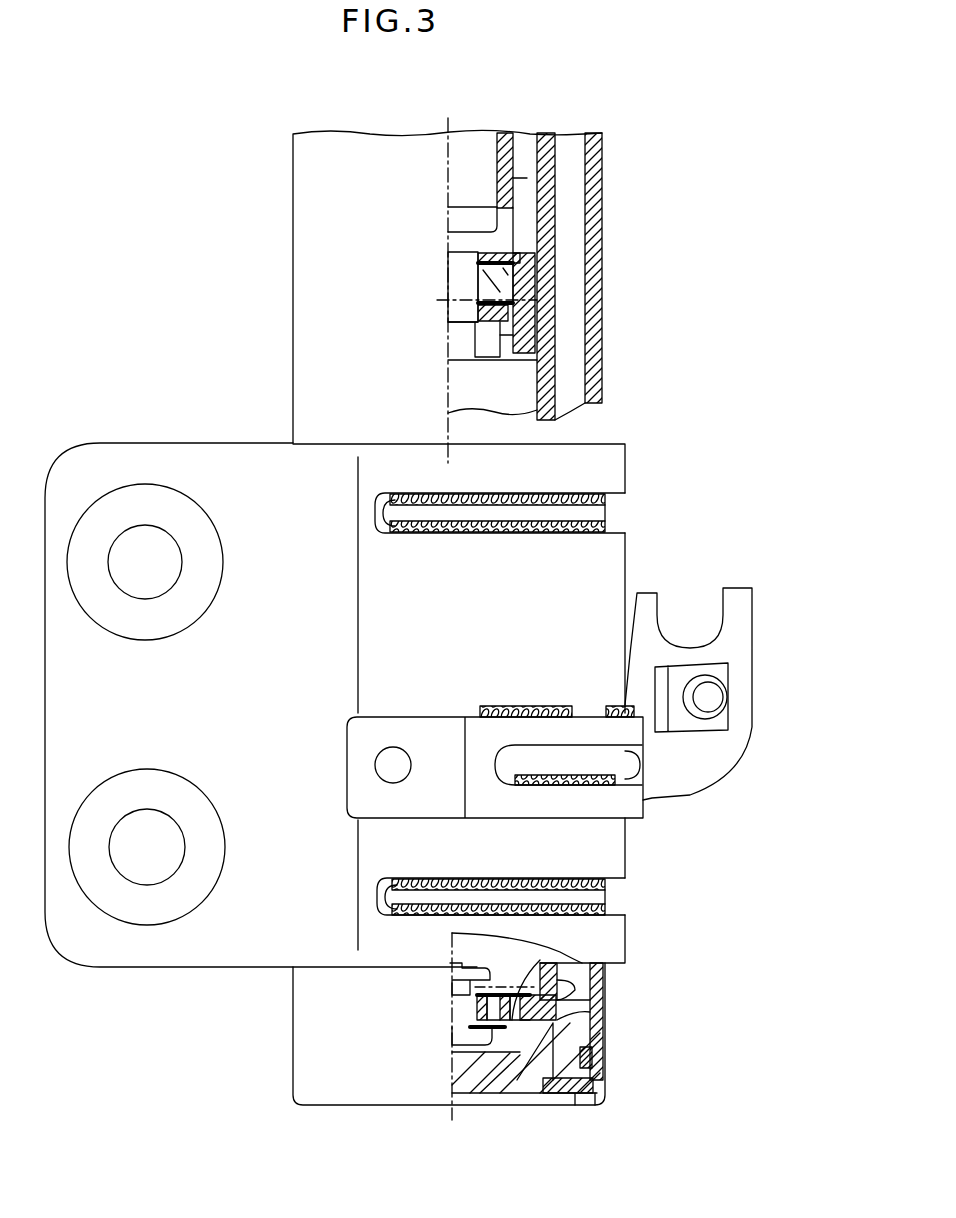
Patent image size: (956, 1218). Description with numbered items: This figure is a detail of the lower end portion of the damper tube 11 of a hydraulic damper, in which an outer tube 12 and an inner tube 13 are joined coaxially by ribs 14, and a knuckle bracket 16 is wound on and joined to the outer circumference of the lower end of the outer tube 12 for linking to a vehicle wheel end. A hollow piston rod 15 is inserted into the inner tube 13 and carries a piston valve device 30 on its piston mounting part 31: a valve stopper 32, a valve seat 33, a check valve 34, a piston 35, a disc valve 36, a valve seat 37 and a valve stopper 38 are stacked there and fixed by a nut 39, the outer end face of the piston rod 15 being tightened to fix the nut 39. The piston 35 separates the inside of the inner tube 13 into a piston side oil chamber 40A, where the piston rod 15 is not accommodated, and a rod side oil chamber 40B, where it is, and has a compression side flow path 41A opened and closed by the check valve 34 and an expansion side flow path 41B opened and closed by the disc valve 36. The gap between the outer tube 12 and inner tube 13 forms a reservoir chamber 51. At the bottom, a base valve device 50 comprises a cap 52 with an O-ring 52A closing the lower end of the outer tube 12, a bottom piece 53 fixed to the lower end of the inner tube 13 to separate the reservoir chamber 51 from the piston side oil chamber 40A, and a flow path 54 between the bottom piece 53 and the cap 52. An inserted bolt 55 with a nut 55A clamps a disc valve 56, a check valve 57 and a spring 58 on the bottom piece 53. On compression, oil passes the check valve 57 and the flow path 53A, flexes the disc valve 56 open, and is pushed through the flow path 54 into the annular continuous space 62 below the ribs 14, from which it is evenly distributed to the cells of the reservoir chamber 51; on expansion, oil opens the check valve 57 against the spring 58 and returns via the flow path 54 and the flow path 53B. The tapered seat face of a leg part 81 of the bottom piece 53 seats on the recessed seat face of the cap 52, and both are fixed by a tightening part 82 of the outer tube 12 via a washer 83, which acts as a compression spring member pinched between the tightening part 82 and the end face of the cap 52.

The damper tube 11 is at (605, 152).
The outer tube 12 is at (592, 145).
The inner tube 13 is at (545, 145).
The ribs 14 is at (570, 145).
The piston rod 15 is at (503, 145).
The knuckle bracket 16 is at (187, 460).
The piston valve device 30 is at (447, 280).
The piston mounting part 31 is at (462, 266).
The valve stopper 32 is at (520, 253).
The valve seat 33 is at (478, 250).
The check valve 34 is at (515, 262).
The piston 35 is at (527, 285).
The disc valve 36 is at (513, 305).
The valve seat 37 is at (487, 328).
The valve stopper 38 is at (510, 320).
The nut 39 is at (462, 340).
The piston side oil chamber 40A is at (465, 390).
The rod side oil chamber 40B is at (510, 178).
The compression side flow path 41A is at (537, 298).
The expansion side flow path 41B is at (437, 300).
The base valve device 50 is at (497, 962).
The reservoir chamber 51 is at (573, 180).
The cap 52 is at (462, 1072).
The O-ring 52A is at (596, 1055).
The bottom piece 53 is at (562, 1020).
The flow path 53A is at (488, 1010).
The flow path 53B is at (596, 1003).
The flow path 54 is at (540, 1060).
The bolt 55 is at (458, 1035).
The nut 55A is at (457, 973).
The disc valve 56 is at (470, 1065).
The check valve 57 is at (523, 1013).
The spring 58 is at (557, 1000).
The annular continuous space 62 is at (623, 963).
The leg part 81 is at (500, 1085).
The tightening part 82 is at (592, 1100).
The washer 83 is at (557, 1090).